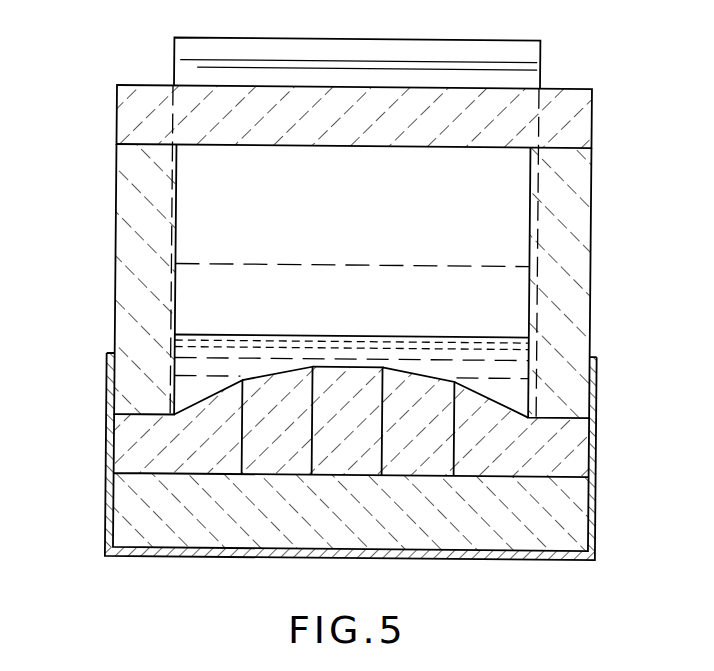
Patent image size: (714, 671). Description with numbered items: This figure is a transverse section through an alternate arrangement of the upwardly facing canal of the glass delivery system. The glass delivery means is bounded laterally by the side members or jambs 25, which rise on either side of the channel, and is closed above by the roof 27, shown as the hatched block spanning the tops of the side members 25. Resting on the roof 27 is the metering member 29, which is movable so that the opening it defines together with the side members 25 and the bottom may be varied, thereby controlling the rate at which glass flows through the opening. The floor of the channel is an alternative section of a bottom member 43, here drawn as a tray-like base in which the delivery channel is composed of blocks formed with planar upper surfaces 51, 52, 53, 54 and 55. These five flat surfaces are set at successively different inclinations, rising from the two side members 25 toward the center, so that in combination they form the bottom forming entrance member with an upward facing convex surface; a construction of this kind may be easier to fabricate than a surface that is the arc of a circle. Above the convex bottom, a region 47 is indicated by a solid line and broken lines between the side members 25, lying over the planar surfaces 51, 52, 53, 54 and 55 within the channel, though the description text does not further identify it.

The side members 25 is at (131, 195).
The roof 27 is at (200, 96).
The metering member 29 is at (487, 50).
The bottom member 43 is at (112, 438).
The layer / melt surface region 47 is at (543, 351).
The planar upper surface 51 is at (218, 395).
The planar upper surface 52 is at (278, 378).
The planar upper surface 53 is at (351, 368).
The planar upper surface 54 is at (420, 378).
The planar upper surface 55 is at (491, 402).